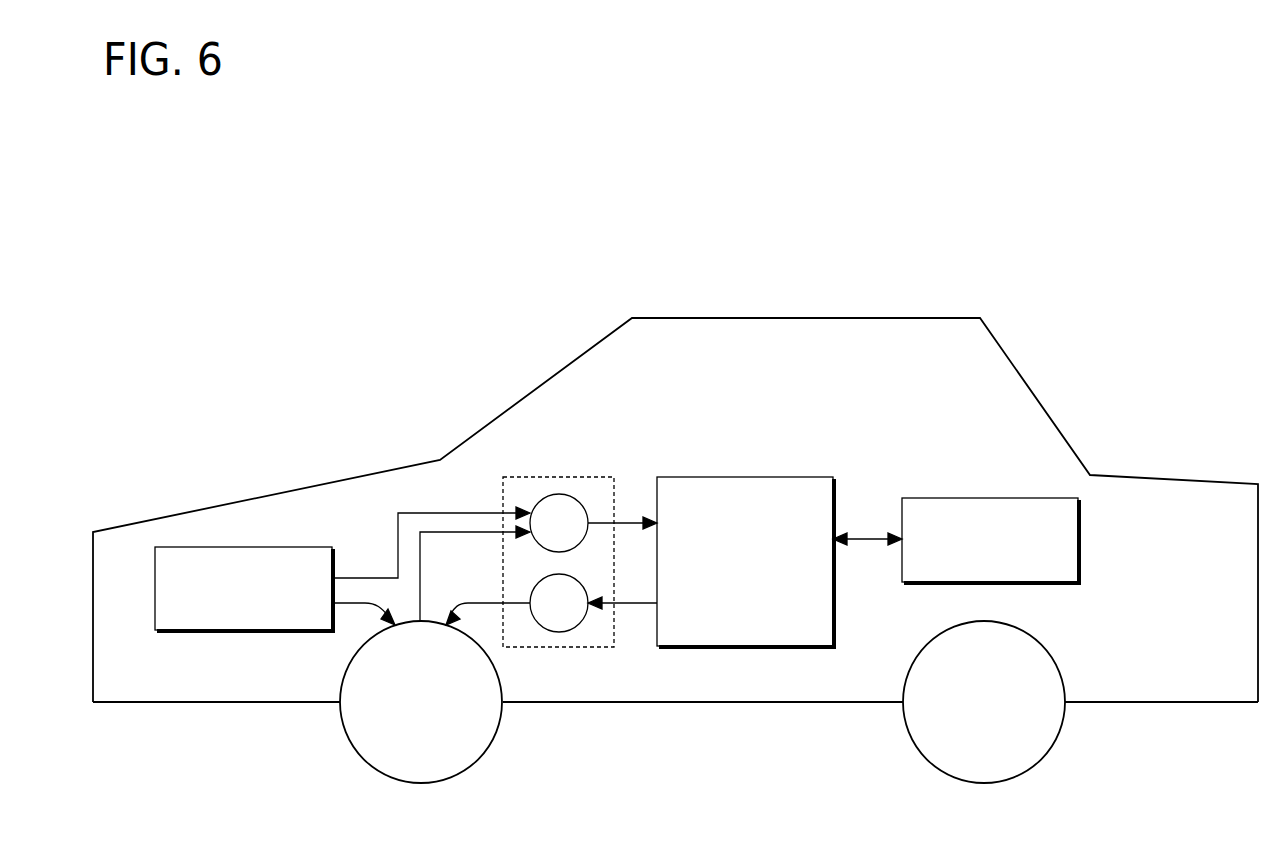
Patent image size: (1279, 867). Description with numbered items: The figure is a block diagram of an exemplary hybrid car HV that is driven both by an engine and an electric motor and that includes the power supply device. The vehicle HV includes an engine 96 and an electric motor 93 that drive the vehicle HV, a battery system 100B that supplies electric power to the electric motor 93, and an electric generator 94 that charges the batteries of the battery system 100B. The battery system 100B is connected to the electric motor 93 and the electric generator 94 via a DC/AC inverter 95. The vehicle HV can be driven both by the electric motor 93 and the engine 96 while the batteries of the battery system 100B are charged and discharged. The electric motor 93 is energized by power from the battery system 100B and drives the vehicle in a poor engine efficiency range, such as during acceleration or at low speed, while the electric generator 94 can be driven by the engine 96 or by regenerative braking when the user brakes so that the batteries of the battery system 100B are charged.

The hybrid car HV is at (845, 318).
The engine 96 is at (240, 547).
The electric generator 94 is at (562, 494).
The electric motor 93 is at (580, 624).
The DC/AC inverter 95 is at (745, 477).
The battery system 100B is at (990, 498).